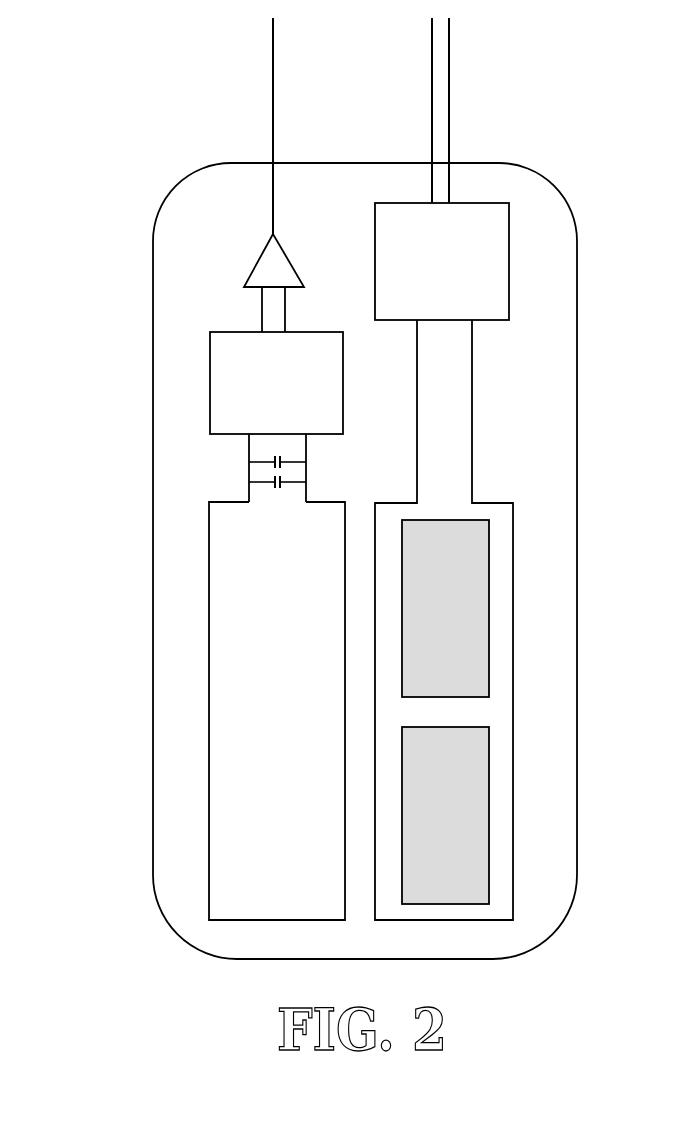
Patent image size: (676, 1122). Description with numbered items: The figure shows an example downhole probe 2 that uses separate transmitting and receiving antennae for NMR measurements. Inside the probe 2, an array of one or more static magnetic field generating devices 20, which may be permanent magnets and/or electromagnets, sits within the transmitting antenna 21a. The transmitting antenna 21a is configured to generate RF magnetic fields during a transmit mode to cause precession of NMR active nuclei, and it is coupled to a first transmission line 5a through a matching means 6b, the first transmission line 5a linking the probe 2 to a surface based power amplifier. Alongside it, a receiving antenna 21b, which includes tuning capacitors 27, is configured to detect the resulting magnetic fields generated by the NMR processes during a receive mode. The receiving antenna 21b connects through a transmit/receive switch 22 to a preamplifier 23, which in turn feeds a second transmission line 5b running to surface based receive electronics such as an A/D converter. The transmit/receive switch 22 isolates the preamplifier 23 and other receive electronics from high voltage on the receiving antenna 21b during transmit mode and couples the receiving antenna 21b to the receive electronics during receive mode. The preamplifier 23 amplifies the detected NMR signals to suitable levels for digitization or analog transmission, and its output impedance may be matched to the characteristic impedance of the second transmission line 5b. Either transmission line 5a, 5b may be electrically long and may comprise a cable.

The downhole probe 2 is at (123, 237).
The first transmission line 5a is at (470, 110).
The second transmission line 5b is at (242, 126).
The matching means 6b is at (442, 261).
The preamplifier 23 is at (250, 283).
The transmit/receive switch 22 is at (276, 383).
The tuning capacitors 27 is at (283, 463).
The receiving antenna 21b is at (259, 694).
The transmitting antenna 21a is at (466, 620).
The static magnetic field generating devices 20 is at (445, 712).